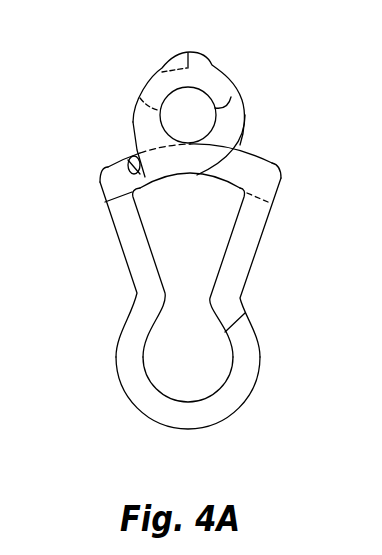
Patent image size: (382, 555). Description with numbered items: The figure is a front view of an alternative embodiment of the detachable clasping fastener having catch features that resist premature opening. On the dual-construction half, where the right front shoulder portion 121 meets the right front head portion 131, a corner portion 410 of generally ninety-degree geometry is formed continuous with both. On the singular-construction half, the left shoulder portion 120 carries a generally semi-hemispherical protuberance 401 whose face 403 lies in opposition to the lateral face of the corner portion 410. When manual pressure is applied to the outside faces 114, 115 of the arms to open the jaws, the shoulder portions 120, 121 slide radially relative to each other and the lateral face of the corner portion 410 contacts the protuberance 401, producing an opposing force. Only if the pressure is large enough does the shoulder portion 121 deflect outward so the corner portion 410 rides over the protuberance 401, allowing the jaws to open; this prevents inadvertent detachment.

The right front head portion 131 is at (146, 124).
The corner portion 410 is at (160, 158).
The face 403 is at (141, 159).
The protuberance 401 is at (129, 160).
The left shoulder portion 120 is at (105, 178).
The right front shoulder portion 121 is at (265, 173).
The outside face 114 is at (122, 253).
The outside face 115 is at (255, 253).